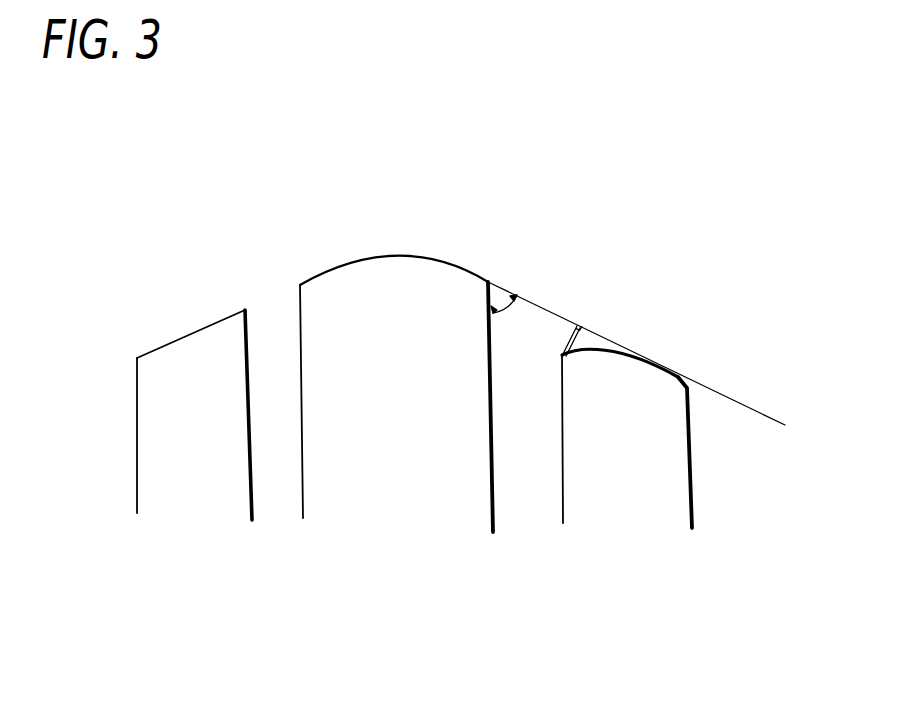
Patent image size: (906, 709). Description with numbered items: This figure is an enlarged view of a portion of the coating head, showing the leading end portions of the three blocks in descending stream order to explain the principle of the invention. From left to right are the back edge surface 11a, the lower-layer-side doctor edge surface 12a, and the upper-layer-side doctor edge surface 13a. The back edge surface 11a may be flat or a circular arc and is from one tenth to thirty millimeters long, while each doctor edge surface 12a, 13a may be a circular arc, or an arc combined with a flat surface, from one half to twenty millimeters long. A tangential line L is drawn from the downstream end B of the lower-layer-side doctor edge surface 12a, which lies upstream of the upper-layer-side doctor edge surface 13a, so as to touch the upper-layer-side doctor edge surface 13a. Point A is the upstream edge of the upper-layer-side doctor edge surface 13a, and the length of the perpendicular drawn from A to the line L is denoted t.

The back edge surface 11a is at (215, 322).
The lower-layer-side doctor edge surface 12a is at (368, 258).
The upper-layer-side doctor edge surface 13a is at (600, 347).
The tangential line L is at (748, 407).
The upstream edge of the upper-layer-side doctor edge surface A is at (562, 355).
The downstream end of the lower-layer-side doctor edge surface B is at (490, 282).
The length of perpendicular t is at (562, 338).